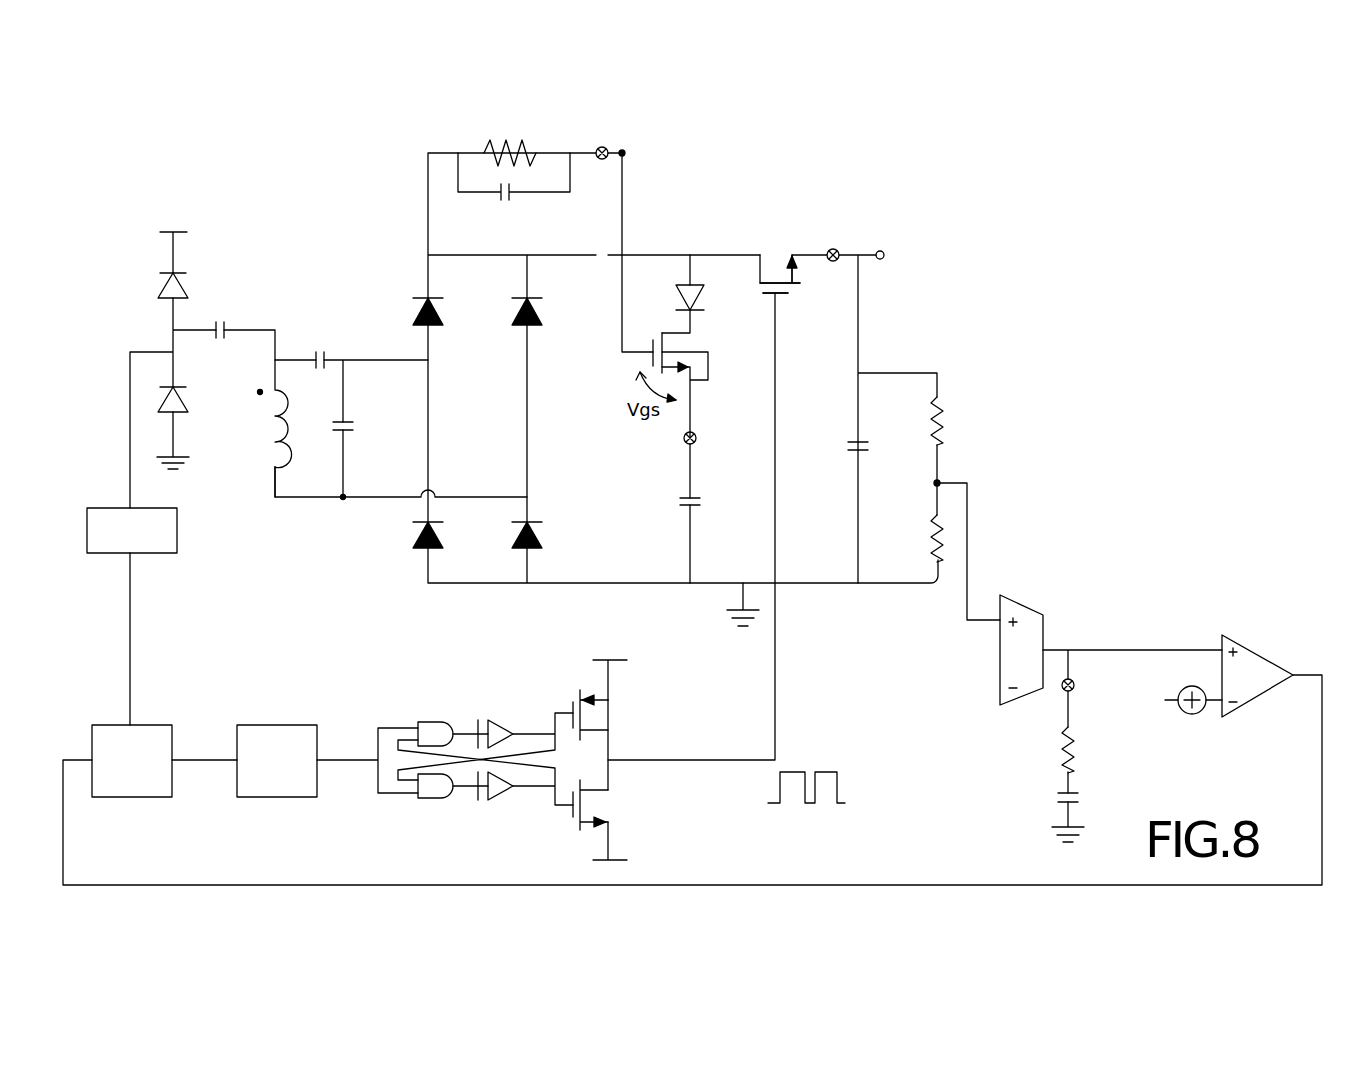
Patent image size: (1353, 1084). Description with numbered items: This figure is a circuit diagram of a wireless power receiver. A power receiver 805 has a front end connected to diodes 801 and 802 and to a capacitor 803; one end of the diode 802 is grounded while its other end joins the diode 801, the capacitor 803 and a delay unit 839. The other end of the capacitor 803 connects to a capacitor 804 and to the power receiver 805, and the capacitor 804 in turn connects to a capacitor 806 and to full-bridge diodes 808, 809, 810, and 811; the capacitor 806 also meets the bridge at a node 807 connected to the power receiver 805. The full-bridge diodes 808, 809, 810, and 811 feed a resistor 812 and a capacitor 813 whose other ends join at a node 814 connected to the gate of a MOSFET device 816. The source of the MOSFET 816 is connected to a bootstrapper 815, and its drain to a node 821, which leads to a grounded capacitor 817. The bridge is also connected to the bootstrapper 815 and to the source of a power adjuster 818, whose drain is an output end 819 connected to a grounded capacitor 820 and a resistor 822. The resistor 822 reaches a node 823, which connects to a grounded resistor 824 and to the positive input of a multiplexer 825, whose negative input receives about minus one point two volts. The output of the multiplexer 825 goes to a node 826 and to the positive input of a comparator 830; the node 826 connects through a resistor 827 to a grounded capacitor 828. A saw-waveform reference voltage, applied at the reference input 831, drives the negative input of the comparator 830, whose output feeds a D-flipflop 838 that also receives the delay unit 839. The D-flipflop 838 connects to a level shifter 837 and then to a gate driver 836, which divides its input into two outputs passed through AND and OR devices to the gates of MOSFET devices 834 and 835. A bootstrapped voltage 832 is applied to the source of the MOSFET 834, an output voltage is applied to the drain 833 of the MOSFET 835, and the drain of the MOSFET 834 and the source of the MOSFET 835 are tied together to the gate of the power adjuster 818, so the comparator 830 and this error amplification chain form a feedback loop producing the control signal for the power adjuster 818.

The diode 801 is at (155, 284).
The diode 802 is at (192, 397).
The capacitor 803 is at (221, 316).
The capacitor 804 is at (319, 346).
The power receiver 805 is at (258, 438).
The capacitor 806 is at (357, 427).
The node 807 is at (276, 502).
The full-bridge diode 808 is at (445, 312).
The full-bridge diode 809 is at (543, 312).
The full-bridge diode 810 is at (445, 535).
The full-bridge diode 811 is at (543, 535).
The resistor 812 is at (512, 140).
The capacitor 813 is at (507, 202).
The node 814 is at (622, 150).
The bootstrapper 815 is at (704, 296).
The MOSFET device 816 is at (653, 338).
The capacitor 817 is at (704, 500).
The power adjuster 818 is at (771, 252).
The output end 819 is at (831, 248).
The capacitor 820 is at (848, 446).
The node 821 is at (698, 438).
The resistor 822 is at (922, 422).
The node 823 is at (930, 483).
The resistor 824 is at (922, 542).
The multiplexer 825 is at (1018, 596).
The node 826 is at (1077, 685).
The resistor 827 is at (1055, 750).
The capacitor 828 is at (1055, 800).
The comparator 830 is at (1222, 632).
The summing node 831 is at (1192, 716).
The supply terminal 832 is at (630, 660).
The drain 833 is at (630, 860).
The MOSFET device 834 is at (612, 717).
The MOSFET device 835 is at (612, 808).
The gate driver 836 is at (430, 718).
The level shifter 837 is at (275, 724).
The D-flipflop 838 is at (155, 724).
The delay unit 839 is at (178, 531).